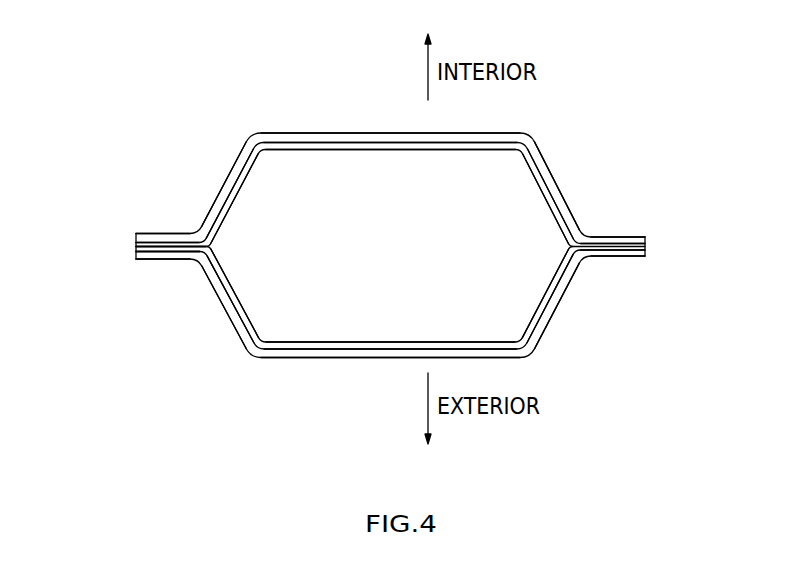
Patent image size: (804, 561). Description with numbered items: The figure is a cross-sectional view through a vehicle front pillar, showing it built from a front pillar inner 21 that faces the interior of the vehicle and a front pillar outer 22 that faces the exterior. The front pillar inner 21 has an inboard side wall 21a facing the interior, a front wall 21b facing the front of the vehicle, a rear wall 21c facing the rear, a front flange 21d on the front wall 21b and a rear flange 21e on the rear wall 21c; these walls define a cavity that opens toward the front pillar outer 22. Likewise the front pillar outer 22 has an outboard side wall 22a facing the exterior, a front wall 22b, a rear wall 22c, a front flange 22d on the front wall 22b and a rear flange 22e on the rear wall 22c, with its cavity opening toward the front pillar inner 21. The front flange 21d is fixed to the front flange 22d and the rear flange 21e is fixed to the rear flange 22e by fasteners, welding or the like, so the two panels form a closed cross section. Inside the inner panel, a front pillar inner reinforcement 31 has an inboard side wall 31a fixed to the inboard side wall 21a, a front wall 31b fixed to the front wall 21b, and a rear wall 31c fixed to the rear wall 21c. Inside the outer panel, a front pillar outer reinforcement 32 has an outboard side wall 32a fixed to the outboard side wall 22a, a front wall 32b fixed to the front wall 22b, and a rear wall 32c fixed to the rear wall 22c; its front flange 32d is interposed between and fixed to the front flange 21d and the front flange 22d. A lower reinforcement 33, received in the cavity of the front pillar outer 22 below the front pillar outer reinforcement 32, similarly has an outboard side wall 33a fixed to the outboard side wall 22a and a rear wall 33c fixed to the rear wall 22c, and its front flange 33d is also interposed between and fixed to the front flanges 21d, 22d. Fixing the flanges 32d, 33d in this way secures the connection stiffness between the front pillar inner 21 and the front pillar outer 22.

The front pillar inner 21 is at (372, 116).
The inboard side wall 21a is at (322, 131).
The front wall 21b is at (230, 170).
The rear wall 21c is at (550, 170).
The front flange 21d is at (166, 233).
The rear flange 21e is at (620, 236).
The front pillar outer 22 is at (373, 377).
The outboard side wall 22a is at (288, 359).
The front wall 22b is at (228, 318).
The rear wall 22c is at (556, 318).
The front flange 22d is at (163, 260).
The rear flange 22e is at (618, 256).
The front pillar inner reinforcement 31 is at (380, 158).
The inboard side wall 31a is at (421, 150).
The front wall 31b is at (234, 201).
The rear wall 31c is at (548, 203).
The front pillar outer reinforcement 32 is at (389, 295).
The outboard side wall 32a is at (399, 319).
The front wall 32b is at (243, 292).
The rear wall 32c is at (495, 292).
The front flange 32d is at (148, 252).
The lower reinforcement 33 is at (375, 334).
The outboard side wall 33a is at (425, 340).
The rear wall 33c is at (552, 281).
The front flange 33d is at (229, 282).